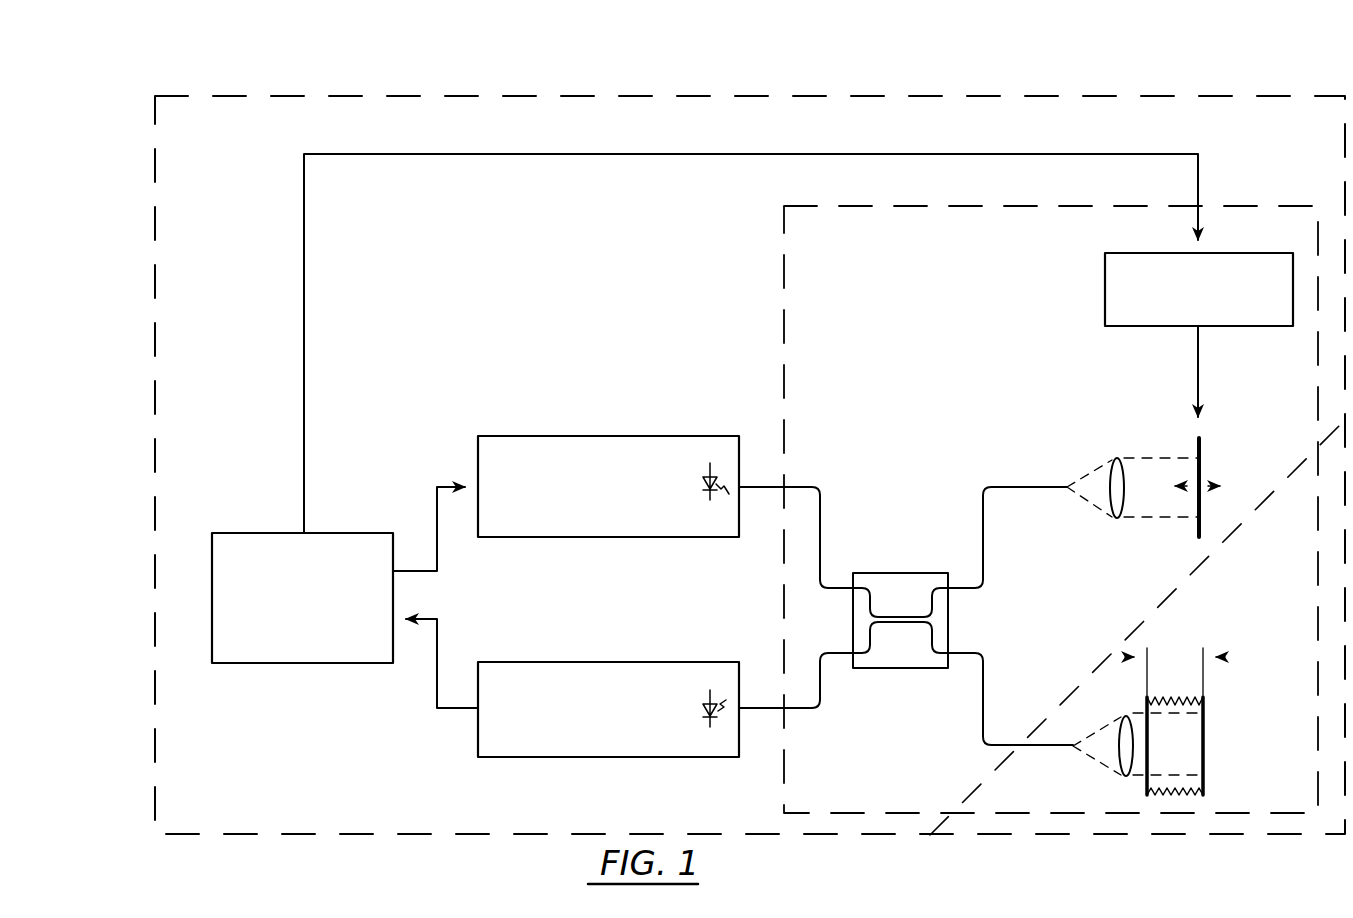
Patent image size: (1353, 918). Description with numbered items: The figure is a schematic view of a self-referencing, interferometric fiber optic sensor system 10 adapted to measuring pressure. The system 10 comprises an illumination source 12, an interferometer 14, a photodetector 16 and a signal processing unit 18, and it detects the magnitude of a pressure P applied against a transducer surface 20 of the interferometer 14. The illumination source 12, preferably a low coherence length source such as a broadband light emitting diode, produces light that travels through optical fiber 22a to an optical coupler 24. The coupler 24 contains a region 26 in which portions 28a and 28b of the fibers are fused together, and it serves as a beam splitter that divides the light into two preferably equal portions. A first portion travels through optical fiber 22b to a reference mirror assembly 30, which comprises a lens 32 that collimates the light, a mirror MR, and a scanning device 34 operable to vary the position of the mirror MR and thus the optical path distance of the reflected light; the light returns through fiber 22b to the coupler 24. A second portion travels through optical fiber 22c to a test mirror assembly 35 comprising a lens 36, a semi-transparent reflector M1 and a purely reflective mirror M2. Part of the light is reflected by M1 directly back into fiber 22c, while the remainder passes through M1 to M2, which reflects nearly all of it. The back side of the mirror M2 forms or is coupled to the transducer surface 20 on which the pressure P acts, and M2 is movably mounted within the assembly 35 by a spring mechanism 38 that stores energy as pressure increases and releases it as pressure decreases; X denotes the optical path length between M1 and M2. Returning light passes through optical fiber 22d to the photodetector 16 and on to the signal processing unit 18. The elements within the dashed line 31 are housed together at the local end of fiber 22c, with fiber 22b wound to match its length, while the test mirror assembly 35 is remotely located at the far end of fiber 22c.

The self-referencing interferometric fiber optic sensor system 10 is at (228, 72).
The dashed line 31 is at (1082, 64).
The interferometer 14 is at (900, 206).
The signal processing unit 18 is at (254, 505).
The scanning device 34 is at (1110, 229).
The illumination source 12 is at (640, 400).
The photodetector 16 is at (596, 630).
The optical fiber 22a is at (822, 500).
The optical fiber 22b is at (990, 487).
The optical fiber 22c is at (990, 667).
The optical fiber 22d is at (825, 700).
The optical coupler 24 is at (901, 622).
The region 26 is at (900, 622).
The fiber portion 28a is at (875, 595).
The fiber portion 28b is at (875, 653).
The reference mirror assembly 30 is at (1126, 481).
The lens 32 is at (1118, 460).
The reference mirror MR is at (1197, 510).
The test mirror assembly 35 is at (1179, 726).
The lens 36 is at (1133, 697).
The transducer surface 20 is at (1184, 762).
The semi-transparent mirror M1 is at (1147, 765).
The reflector M2 is at (1200, 747).
The spring mechanism 38 is at (1185, 797).
The pressure P is at (1252, 716).
The optical path length X is at (1175, 670).